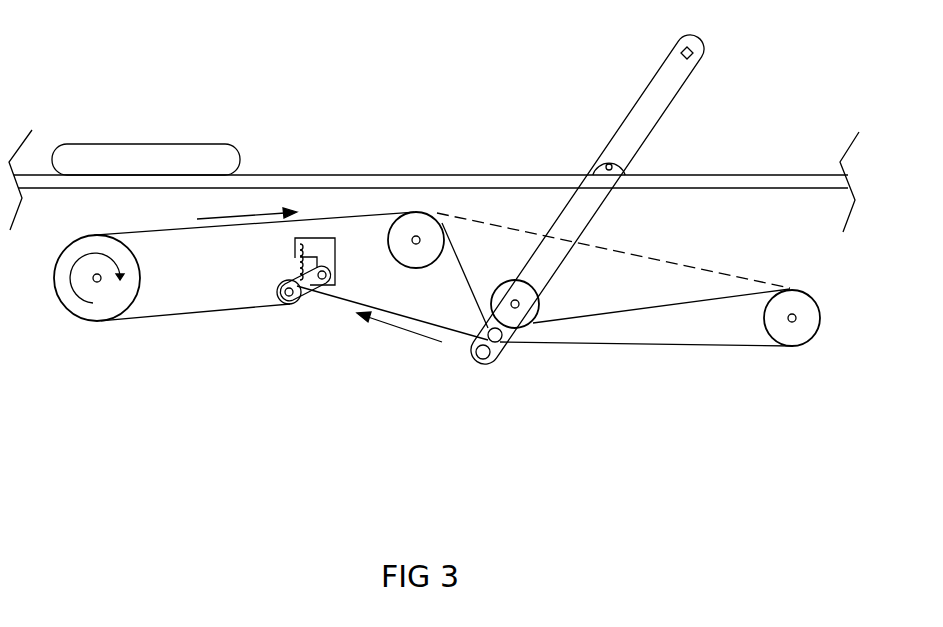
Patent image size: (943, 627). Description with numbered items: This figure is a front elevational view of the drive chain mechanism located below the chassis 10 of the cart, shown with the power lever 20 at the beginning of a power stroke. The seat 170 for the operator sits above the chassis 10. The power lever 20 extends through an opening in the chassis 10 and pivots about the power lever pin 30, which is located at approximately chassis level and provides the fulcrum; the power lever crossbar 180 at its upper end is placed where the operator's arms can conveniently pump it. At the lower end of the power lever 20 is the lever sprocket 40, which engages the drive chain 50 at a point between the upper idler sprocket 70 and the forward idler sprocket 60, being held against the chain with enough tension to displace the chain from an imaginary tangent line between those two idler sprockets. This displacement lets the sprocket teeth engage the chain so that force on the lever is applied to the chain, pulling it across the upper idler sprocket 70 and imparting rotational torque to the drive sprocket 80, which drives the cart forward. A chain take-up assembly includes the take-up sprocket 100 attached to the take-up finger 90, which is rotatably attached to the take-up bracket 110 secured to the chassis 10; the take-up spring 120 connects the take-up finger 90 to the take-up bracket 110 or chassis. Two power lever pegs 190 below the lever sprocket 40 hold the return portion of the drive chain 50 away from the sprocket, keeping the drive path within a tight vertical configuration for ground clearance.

The chassis 10 is at (317, 175).
The power lever 20 is at (640, 92).
The power lever pin 30 is at (618, 157).
The lever sprocket 40 is at (538, 297).
The drive chain 50 is at (662, 347).
The forward idler sprocket 60 is at (808, 350).
The upper idler sprocket 70 is at (443, 210).
The drive sprocket 80 is at (63, 253).
The take-up finger 90 is at (337, 285).
The take-up sprocket 100 is at (285, 308).
The take-up bracket 110 is at (295, 248).
The take-up spring 120 is at (297, 267).
The seat 170 is at (107, 143).
The power lever crossbar 180 is at (700, 50).
The power lever pegs 190 is at (490, 358).